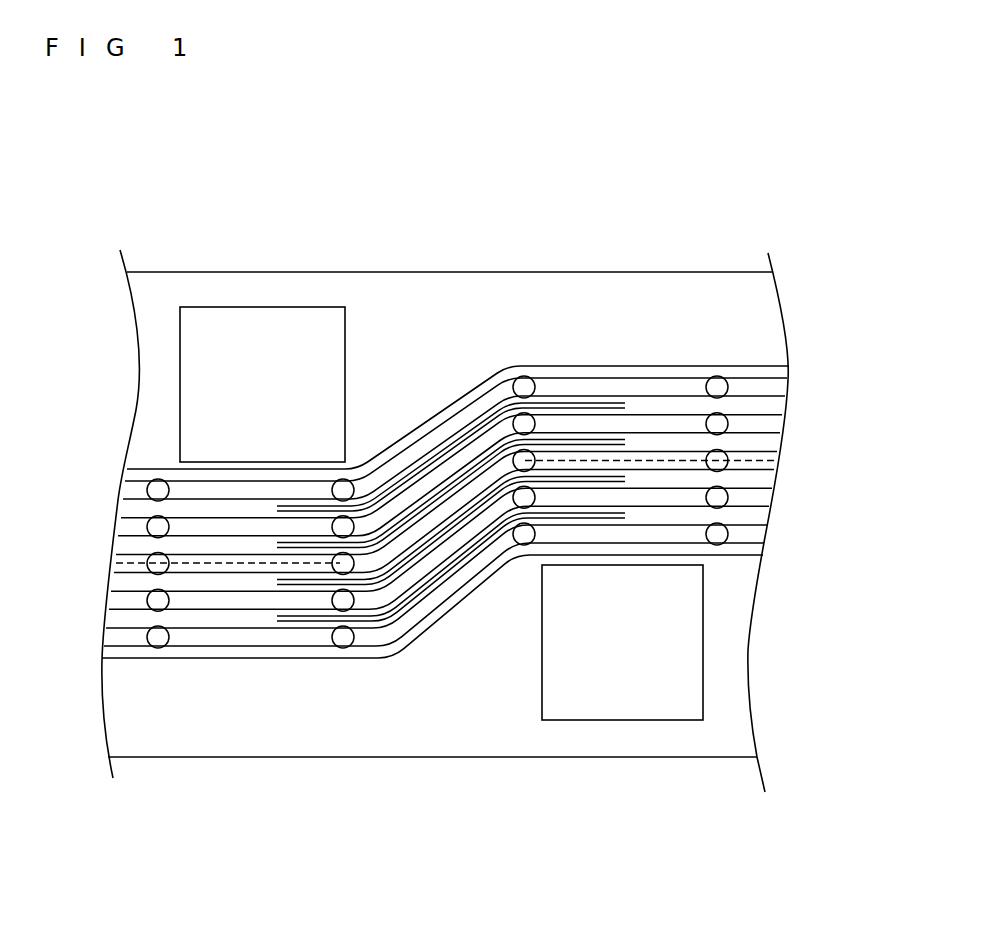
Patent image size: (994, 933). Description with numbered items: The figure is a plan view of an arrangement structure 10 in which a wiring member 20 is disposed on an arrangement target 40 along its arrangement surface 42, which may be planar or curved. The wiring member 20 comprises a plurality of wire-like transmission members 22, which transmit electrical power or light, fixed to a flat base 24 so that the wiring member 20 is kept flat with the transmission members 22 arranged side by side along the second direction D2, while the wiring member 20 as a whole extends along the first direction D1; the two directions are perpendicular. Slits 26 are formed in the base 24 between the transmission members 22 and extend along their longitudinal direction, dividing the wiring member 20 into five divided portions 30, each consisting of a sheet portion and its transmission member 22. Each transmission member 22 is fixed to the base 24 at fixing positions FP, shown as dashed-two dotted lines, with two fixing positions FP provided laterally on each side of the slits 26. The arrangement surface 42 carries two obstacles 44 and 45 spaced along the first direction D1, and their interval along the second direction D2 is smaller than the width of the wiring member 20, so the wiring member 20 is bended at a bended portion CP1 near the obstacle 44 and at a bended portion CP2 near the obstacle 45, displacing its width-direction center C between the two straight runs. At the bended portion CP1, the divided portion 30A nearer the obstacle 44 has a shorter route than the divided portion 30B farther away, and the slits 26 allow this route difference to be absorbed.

The arrangement structure 10 is at (175, 193).
The wiring member 20 is at (445, 533).
The wire-like transmission member 22 is at (672, 427).
The base 24 is at (253, 653).
The slit 26 is at (402, 520).
The divided portion 30 is at (452, 514).
The divided portion 30A is at (428, 414).
The divided portion 30B is at (447, 620).
The arrangement target 40 is at (372, 262).
The arrangement surface 42 is at (437, 288).
The obstacle 44 is at (272, 316).
The obstacle 45 is at (590, 703).
The bended portion CP1 is at (383, 675).
The bended portion CP2 is at (504, 350).
The fixing position FP is at (536, 425).
The center C is at (110, 560).
The first direction D1 is at (701, 897).
The second direction D2 is at (701, 897).